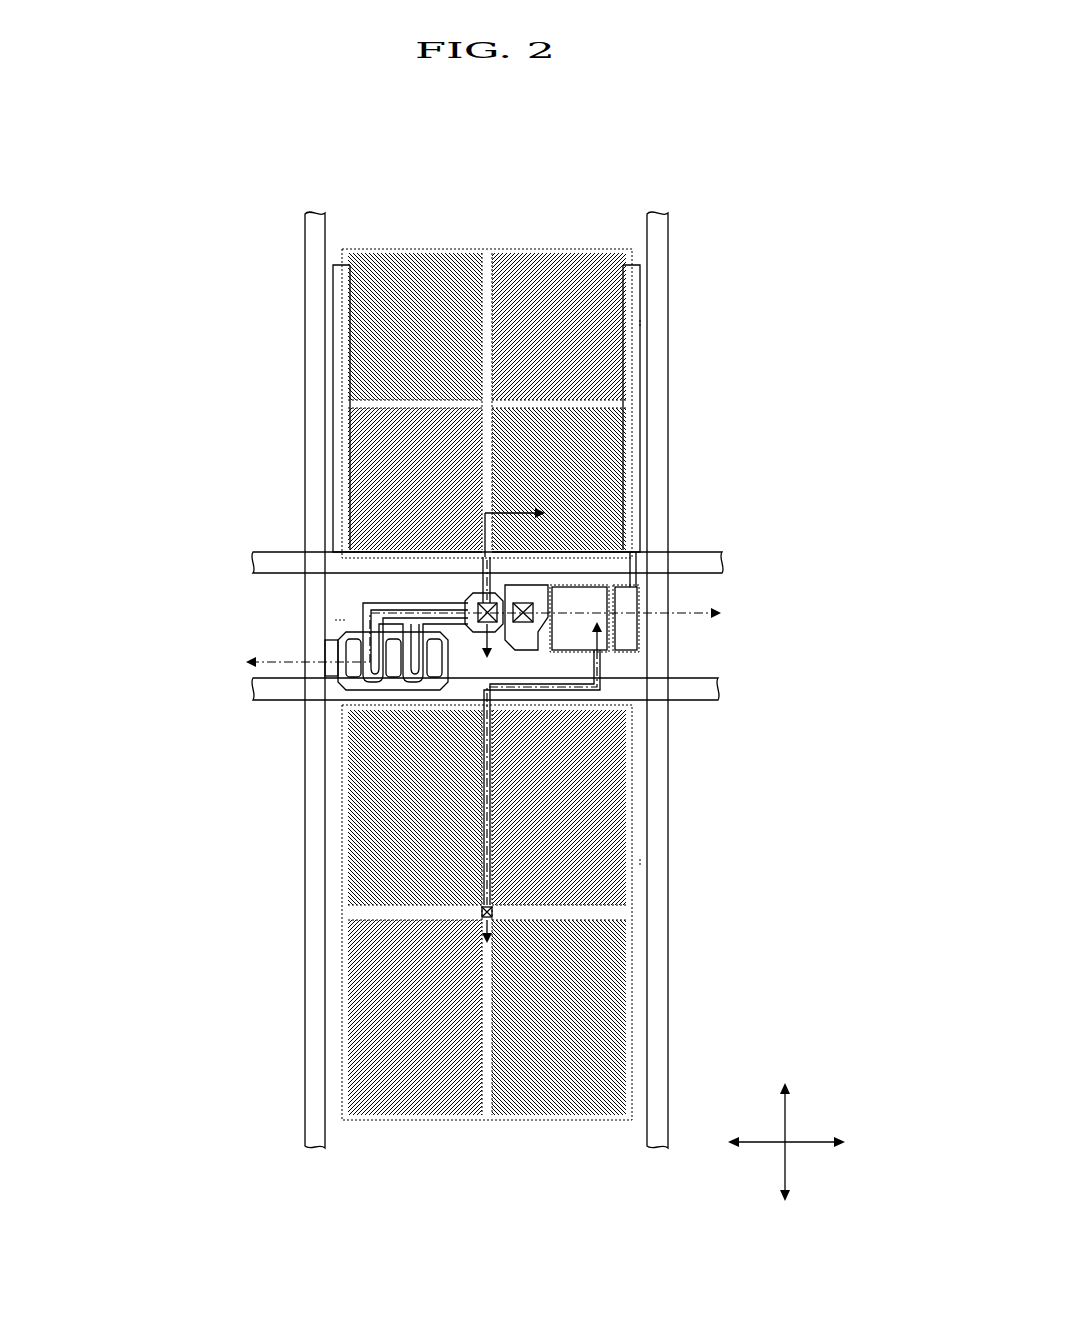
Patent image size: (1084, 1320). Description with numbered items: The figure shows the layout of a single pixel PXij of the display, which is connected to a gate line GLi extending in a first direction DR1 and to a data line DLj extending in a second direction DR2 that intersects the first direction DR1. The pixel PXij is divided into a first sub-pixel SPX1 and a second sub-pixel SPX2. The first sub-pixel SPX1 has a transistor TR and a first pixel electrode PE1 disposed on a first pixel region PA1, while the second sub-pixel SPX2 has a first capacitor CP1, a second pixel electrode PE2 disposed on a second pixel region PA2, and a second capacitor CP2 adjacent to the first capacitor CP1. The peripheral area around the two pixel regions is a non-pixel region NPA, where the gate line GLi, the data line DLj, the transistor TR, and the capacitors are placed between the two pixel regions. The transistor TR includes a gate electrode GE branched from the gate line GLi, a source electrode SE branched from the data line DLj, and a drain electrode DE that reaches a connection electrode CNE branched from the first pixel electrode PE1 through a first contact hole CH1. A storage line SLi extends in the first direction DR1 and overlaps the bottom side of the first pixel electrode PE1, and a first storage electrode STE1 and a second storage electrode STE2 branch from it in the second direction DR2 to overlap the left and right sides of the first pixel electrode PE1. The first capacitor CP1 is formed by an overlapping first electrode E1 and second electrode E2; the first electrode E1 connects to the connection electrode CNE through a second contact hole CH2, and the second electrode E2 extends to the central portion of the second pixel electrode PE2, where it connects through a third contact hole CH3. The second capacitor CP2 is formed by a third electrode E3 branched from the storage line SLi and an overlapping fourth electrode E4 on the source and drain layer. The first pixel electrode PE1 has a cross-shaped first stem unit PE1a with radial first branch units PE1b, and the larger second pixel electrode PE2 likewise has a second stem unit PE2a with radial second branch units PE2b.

The pixel PXij is at (656, 185).
The data line DLj is at (305, 278).
The storage line SLi is at (253, 563).
The gate line GLi is at (253, 688).
The non-pixel region NPA is at (343, 620).
The first sub-pixel SPX1 is at (212, 366).
The second sub-pixel SPX2 is at (212, 859).
The first pixel electrode PE1 is at (826, 385).
The first stem unit PE1a is at (608, 387).
The first branch units PE1b is at (608, 432).
The second pixel electrode PE2 is at (826, 890).
The second stem unit PE2a is at (632, 888).
The second branch units PE2b is at (632, 940).
The first pixel region PA1 is at (488, 242).
The second pixel region PA2 is at (488, 1128).
The first storage electrode STE1 is at (335, 470).
The second storage electrode STE2 is at (640, 468).
The connection electrode CNE is at (466, 597).
The first contact hole CH1 is at (478, 610).
The second contact hole CH2 is at (523, 625).
The third contact hole CH3 is at (481, 912).
The first capacitor CP1 is at (802, 590).
The second capacitor CP2 is at (802, 505).
The first electrode E1 is at (578, 583).
The second electrode E2 is at (546, 603).
The third electrode E3 is at (637, 628).
The fourth electrode E4 is at (627, 584).
The transistor TR is at (182, 725).
The gate electrode GE is at (327, 642).
The drain electrode DE is at (372, 678).
The source electrode SE is at (396, 692).
The first direction DR1 is at (809, 1141).
The second direction DR2 is at (786, 1127).